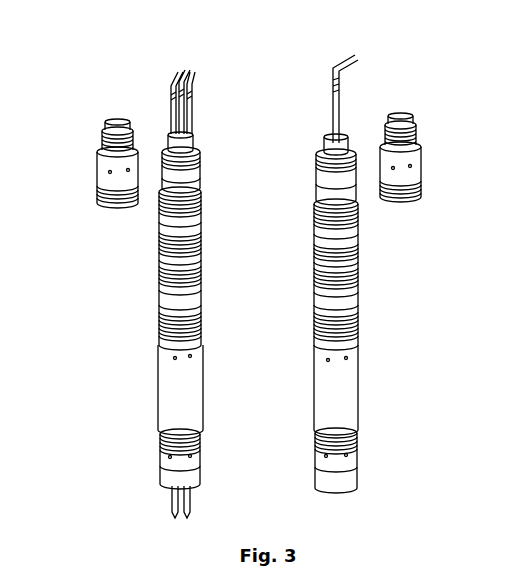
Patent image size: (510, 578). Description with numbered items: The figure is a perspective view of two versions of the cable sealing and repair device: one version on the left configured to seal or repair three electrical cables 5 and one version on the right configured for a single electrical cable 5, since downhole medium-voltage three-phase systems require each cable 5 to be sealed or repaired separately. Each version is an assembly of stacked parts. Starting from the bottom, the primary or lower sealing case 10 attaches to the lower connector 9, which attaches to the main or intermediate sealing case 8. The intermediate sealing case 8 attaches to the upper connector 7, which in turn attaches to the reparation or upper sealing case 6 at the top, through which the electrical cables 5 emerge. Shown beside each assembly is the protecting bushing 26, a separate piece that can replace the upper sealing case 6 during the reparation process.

The electrical cable 5 is at (194, 72).
The reparation or upper sealing case 6 is at (203, 127).
The upper connector 7 is at (332, 248).
The main or intermediate sealing case 8 is at (203, 258).
The lower connector 9 is at (333, 382).
The primary or lower sealing case 10 is at (207, 427).
The protecting bushing 26 is at (97, 157).